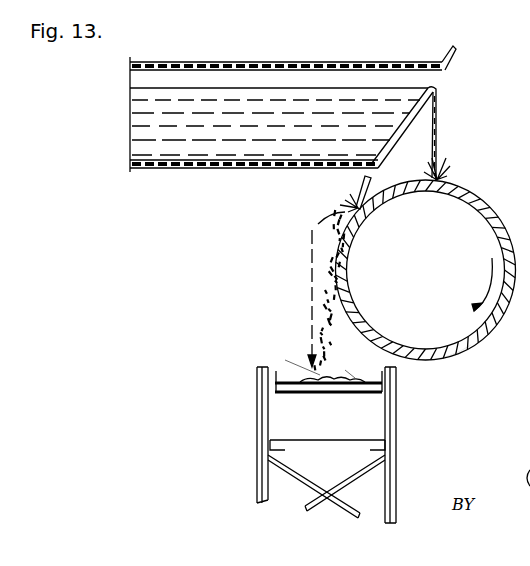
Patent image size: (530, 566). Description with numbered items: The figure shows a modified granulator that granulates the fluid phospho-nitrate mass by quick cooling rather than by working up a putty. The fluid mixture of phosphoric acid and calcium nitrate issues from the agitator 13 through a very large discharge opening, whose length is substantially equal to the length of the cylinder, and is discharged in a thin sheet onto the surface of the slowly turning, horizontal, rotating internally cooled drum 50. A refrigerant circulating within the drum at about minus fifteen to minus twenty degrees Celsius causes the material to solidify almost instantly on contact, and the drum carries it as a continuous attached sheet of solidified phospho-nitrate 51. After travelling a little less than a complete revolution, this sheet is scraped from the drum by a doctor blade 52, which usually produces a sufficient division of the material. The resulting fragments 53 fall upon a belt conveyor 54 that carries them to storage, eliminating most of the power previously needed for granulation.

The agitator 13 is at (251, 137).
The rotating internally cooled drum 50 is at (408, 186).
The solidified phospho-nitrate 51 is at (468, 347).
The doctor blade 52 is at (361, 188).
The fragments 53 is at (320, 291).
The belt conveyor 54 is at (296, 378).